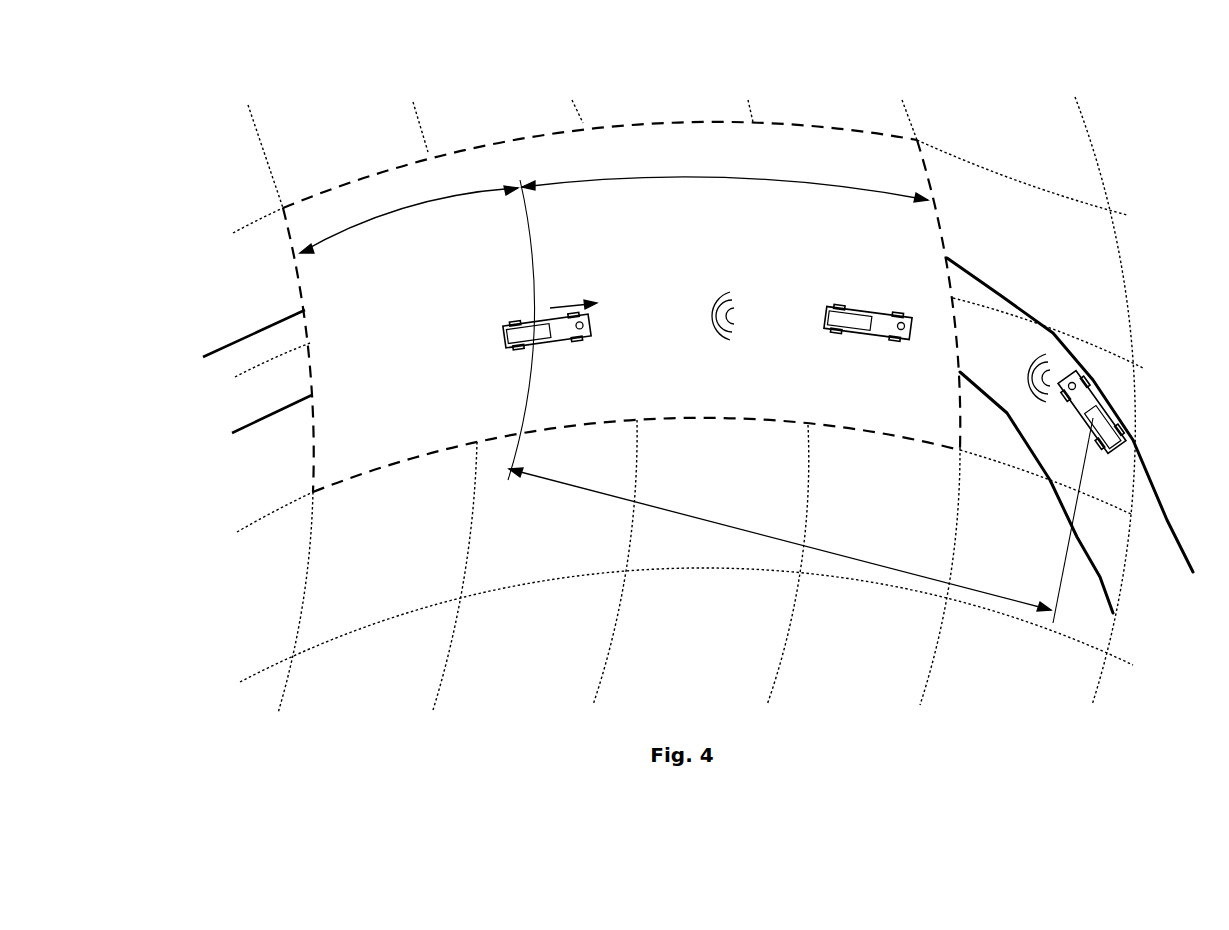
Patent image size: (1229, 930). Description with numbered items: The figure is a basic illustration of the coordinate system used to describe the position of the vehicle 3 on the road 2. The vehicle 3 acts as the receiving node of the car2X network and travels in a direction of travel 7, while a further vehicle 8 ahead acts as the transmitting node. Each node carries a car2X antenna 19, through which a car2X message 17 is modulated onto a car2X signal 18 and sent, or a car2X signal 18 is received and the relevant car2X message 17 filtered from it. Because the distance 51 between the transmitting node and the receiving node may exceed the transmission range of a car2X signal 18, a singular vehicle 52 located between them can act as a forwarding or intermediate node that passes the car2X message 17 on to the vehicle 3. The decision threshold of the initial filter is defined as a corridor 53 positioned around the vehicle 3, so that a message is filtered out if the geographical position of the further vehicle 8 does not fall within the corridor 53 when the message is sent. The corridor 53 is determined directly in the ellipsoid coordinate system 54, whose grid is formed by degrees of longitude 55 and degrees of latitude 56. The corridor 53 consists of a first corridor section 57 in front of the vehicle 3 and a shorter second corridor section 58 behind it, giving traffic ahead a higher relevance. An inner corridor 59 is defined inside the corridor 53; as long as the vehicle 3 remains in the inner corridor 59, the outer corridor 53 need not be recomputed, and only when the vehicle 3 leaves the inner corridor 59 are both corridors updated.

The road 2 is at (726, 257).
The vehicle 3 is at (549, 348).
The direction of travel 7 is at (562, 300).
The further vehicle 8 is at (1092, 384).
The car2X message 17 is at (744, 288).
The car2X signal 18 is at (724, 342).
The car2X antenna 19 is at (588, 326).
The distance 51 is at (722, 524).
The singular vehicle 52 is at (868, 308).
The corridor 53 is at (312, 438).
The ellipsoid coordinate system 54 is at (226, 145).
The degrees of longitude 55 is at (253, 108).
The degrees of latitude 56 is at (240, 227).
The first corridor section 57 is at (690, 178).
The second corridor section 58 is at (388, 220).
The inner corridor 59 is at (655, 356).